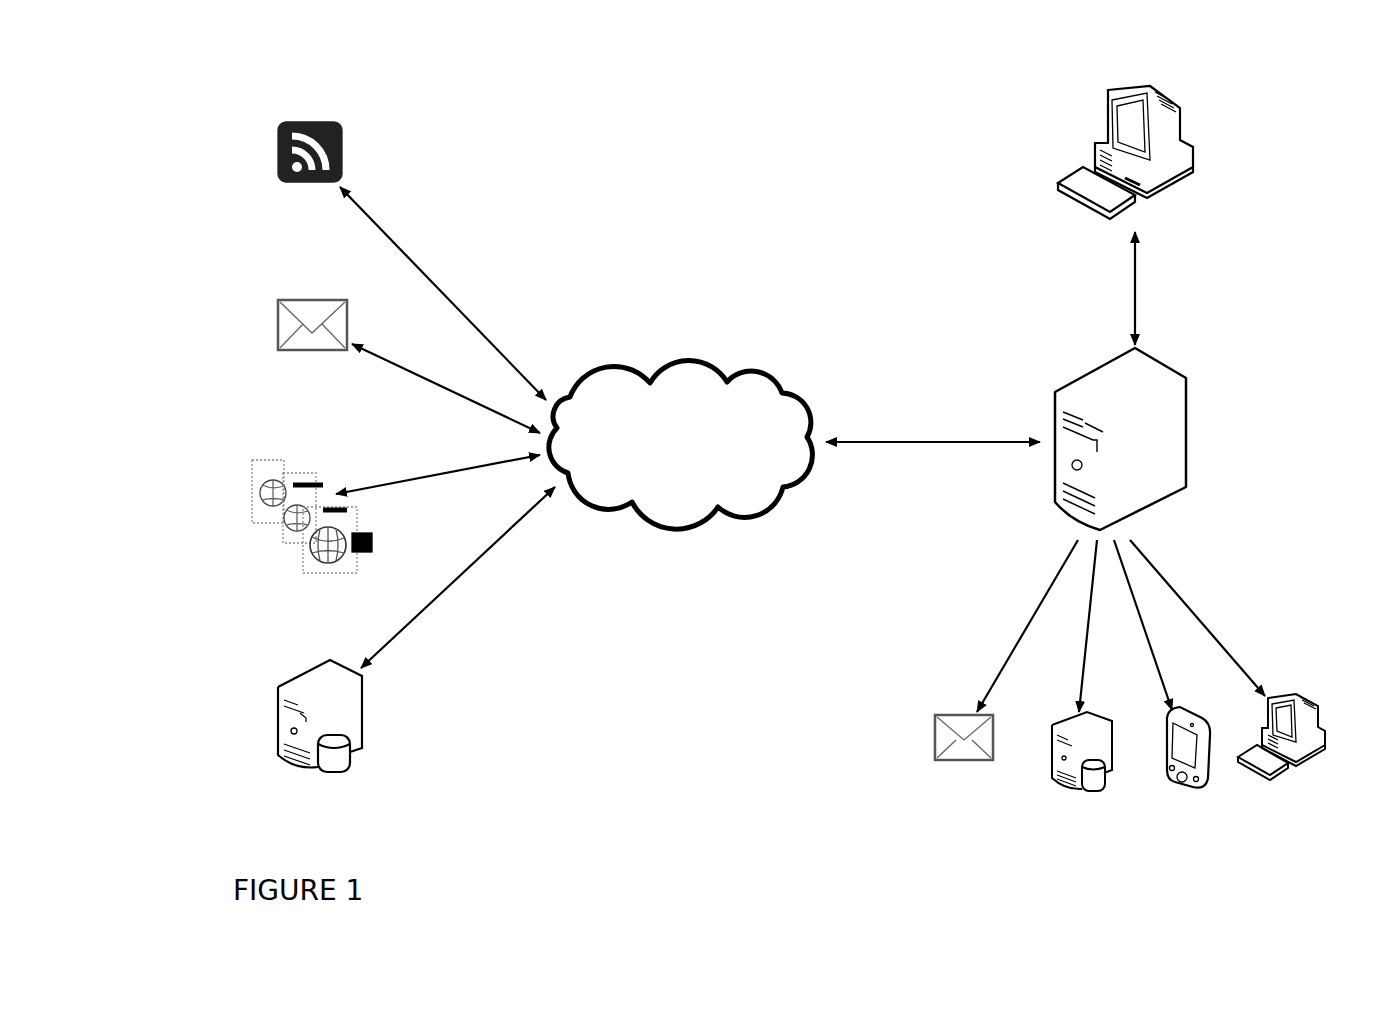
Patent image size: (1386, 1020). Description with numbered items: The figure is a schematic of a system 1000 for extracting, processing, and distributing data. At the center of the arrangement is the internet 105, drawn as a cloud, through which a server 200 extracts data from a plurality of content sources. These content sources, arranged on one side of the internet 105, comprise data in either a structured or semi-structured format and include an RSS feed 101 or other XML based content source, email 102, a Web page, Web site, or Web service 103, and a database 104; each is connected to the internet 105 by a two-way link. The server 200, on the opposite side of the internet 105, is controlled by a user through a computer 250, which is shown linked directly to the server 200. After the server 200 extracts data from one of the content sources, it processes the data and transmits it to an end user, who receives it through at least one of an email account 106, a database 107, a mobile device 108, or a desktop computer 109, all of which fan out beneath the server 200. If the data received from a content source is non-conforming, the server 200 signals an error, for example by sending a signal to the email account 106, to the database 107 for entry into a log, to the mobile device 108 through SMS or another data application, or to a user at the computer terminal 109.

The system 1000 is at (458, 110).
The RSS feed 101 is at (268, 157).
The email 102 is at (268, 323).
The Web page, Web site, or Web service 103 is at (235, 495).
The database 104 is at (258, 714).
The internet 105 is at (700, 352).
The email account 106 is at (958, 766).
The database 107 is at (1078, 800).
The mobile device 108 is at (1188, 800).
The desktop computer 109 is at (1290, 784).
The server 200 is at (1200, 425).
The computer 250 is at (1218, 147).